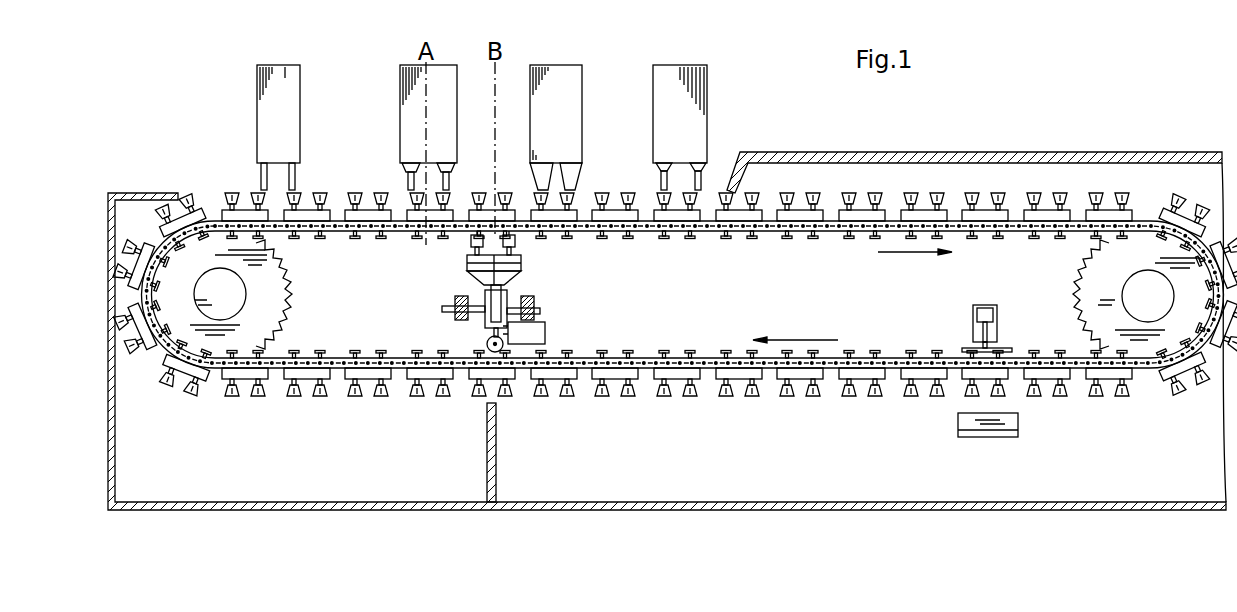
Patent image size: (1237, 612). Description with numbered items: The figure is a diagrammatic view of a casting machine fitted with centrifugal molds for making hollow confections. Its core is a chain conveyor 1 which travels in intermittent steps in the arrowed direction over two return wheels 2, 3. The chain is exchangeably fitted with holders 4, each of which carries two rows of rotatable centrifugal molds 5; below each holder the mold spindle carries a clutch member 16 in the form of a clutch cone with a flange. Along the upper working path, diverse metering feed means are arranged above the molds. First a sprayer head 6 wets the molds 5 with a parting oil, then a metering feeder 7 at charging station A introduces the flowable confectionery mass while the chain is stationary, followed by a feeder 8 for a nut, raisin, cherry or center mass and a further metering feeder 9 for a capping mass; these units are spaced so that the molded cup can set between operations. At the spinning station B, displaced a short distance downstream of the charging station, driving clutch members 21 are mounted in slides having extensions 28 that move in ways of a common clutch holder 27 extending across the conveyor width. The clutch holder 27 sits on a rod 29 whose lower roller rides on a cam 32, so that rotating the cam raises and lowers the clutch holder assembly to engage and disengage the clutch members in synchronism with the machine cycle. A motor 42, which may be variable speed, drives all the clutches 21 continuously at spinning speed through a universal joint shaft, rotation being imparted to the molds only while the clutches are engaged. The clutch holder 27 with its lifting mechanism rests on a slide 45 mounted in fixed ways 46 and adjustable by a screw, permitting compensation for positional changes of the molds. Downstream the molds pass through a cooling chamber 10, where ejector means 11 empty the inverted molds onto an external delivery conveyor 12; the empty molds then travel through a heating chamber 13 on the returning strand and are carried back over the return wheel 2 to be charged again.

The chain conveyor 1 is at (957, 235).
The return wheel 2 is at (195, 345).
The return wheel 3 is at (1113, 348).
The holder 4 is at (613, 214).
The centrifugal mold 5 is at (353, 193).
The sprayer head 6 is at (269, 132).
The metering feeder 7 is at (419, 132).
The feeder 8 is at (547, 132).
The metering feeder 9 is at (671, 132).
The cooling chamber 10 is at (897, 157).
The ejector means 11 is at (973, 332).
The delivery conveyor 12 is at (960, 424).
The heating chamber 13 is at (278, 470).
The clutch member 16 is at (1033, 241).
The driving clutch member 21 is at (470, 242).
The clutch holder 27 is at (513, 272).
The extension 28 is at (522, 258).
The rod 29 is at (484, 300).
The cam 32 is at (491, 352).
The motor 42 is at (542, 344).
The slide 45 is at (442, 312).
The fixed ways 46 is at (458, 318).